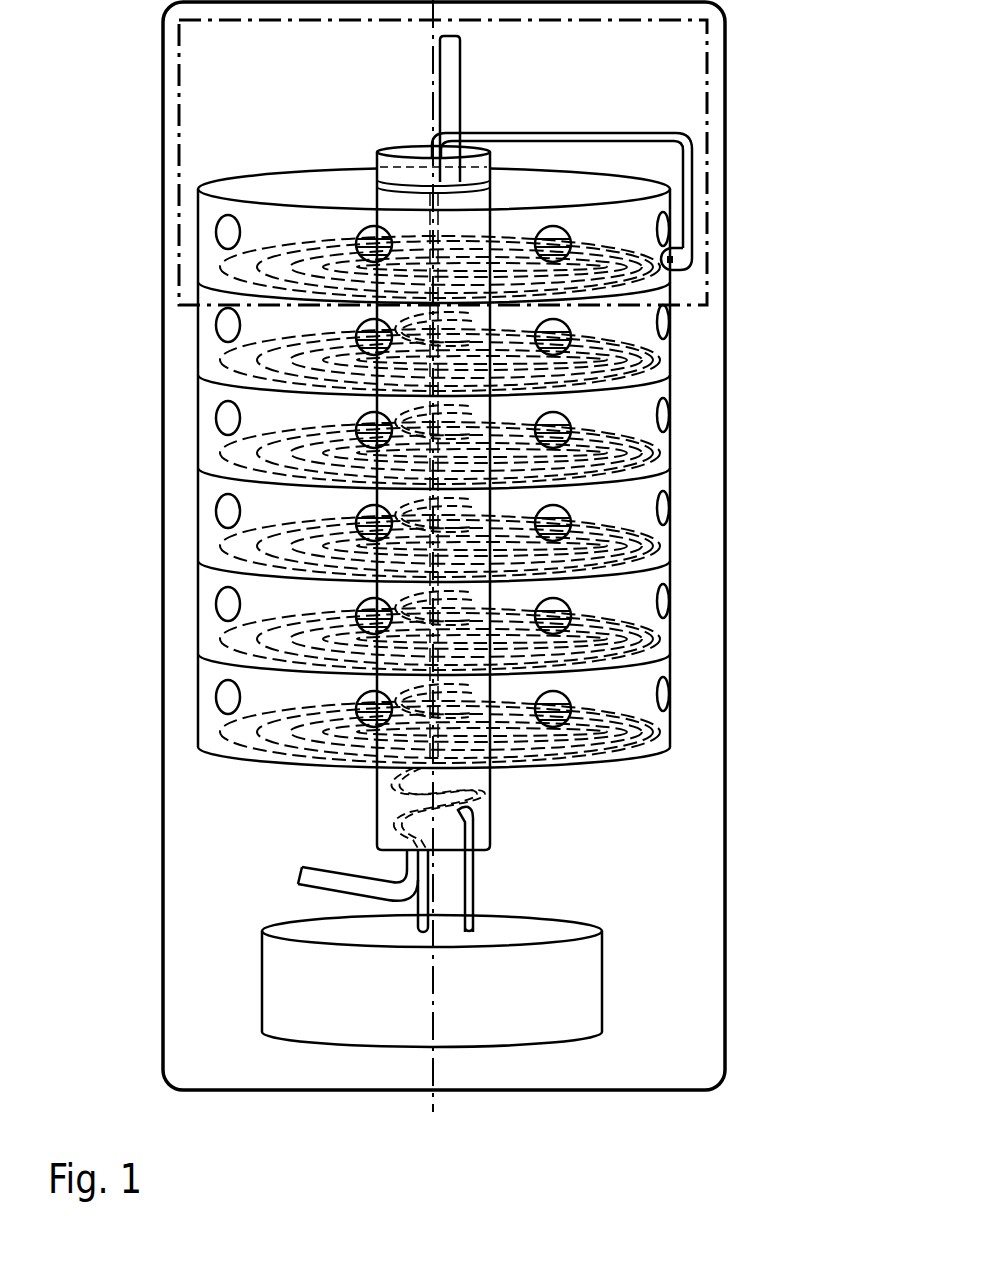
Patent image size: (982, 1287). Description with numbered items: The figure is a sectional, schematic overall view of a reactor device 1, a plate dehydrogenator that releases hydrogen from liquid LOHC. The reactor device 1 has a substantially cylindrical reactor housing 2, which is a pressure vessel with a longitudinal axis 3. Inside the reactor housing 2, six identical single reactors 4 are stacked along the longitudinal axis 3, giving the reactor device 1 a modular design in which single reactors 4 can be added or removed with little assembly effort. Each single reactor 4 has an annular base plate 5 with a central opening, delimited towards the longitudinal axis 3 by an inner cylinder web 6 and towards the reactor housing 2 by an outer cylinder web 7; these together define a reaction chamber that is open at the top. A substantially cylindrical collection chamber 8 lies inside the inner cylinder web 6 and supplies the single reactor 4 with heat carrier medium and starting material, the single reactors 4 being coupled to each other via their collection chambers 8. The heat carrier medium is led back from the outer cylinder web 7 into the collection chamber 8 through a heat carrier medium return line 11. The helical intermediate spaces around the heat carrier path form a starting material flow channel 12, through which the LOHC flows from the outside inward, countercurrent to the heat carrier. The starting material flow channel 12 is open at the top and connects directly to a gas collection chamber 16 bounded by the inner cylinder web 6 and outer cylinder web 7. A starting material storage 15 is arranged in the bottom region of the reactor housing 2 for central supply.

The reactor device 1 is at (140, 214).
The reactor housing 2 is at (163, 151).
The longitudinal axis 3 is at (437, 99).
The single reactor 4 is at (206, 266).
The annular base plate 5 is at (670, 277).
The inner cylinder web 6 is at (492, 203).
The outer cylinder web 7 is at (647, 223).
The collection chamber 8 is at (490, 157).
The heat carrier medium return line 11 is at (686, 150).
The starting material flow channel 12 is at (666, 258).
The starting material storage 15 is at (265, 977).
The gas collection chamber 16 is at (355, 204).